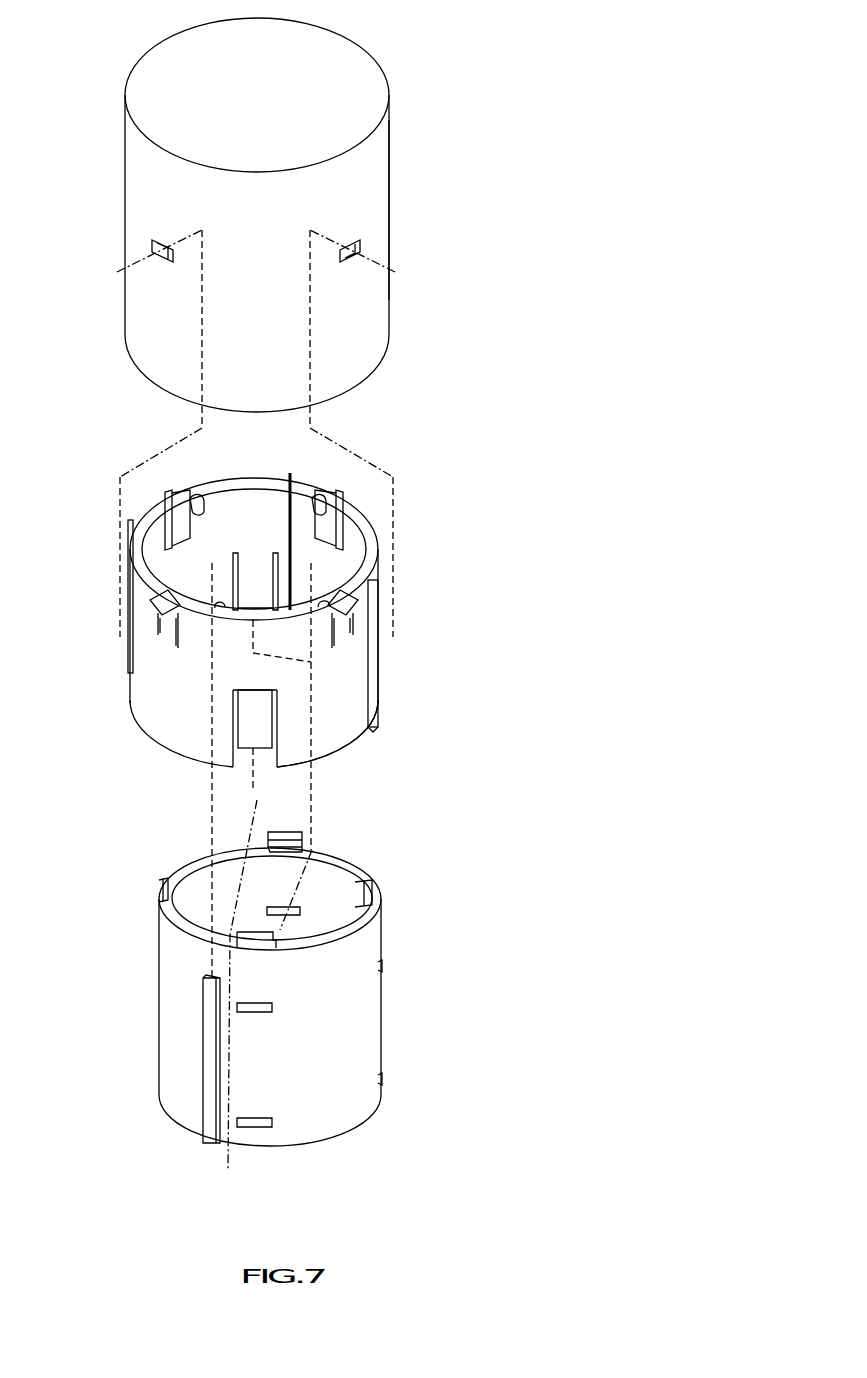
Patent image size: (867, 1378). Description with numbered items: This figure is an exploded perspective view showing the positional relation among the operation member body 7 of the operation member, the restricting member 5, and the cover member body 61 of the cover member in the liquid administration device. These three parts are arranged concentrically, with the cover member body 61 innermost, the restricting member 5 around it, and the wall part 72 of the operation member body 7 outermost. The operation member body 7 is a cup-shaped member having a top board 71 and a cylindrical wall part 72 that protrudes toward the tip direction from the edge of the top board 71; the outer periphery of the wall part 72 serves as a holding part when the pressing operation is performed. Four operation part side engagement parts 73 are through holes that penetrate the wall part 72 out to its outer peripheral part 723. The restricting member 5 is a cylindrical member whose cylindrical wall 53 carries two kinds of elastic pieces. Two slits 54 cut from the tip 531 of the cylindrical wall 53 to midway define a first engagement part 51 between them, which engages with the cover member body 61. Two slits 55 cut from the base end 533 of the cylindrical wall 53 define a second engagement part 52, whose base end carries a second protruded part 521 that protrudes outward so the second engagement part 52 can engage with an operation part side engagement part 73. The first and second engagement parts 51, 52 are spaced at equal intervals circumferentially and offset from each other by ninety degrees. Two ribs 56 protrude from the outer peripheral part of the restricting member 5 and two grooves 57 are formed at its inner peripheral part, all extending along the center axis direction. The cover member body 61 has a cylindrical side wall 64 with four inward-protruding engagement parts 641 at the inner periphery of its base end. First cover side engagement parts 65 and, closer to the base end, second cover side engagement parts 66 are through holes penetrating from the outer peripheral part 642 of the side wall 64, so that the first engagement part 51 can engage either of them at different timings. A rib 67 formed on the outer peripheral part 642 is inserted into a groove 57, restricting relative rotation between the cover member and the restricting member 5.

The operation member body 7 is at (283, 215).
The top board 71 is at (355, 78).
The wall part 72 is at (375, 186).
The outer peripheral part 723 is at (365, 215).
The operation part side engagement part 73 is at (352, 252).
The restricting member 5 is at (255, 615).
The first engagement part 51 is at (377, 562).
The second engagement part 52 is at (163, 488).
The second protruded part 521 is at (152, 598).
The cylindrical wall 53 is at (340, 735).
The tip 531 is at (330, 762).
The base end 533 is at (225, 482).
The slit 54 is at (235, 572).
The slit 55 is at (196, 495).
The rib 56 is at (133, 522).
The groove 57 is at (285, 497).
The cover member body 61 is at (318, 990).
The side wall 64 is at (315, 997).
The engagement part 641 is at (170, 870).
The outer peripheral part 642 is at (360, 1028).
The first cover side engagement part 65 is at (382, 1082).
The second cover side engagement part 66 is at (300, 912).
The rib 67 is at (205, 1042).